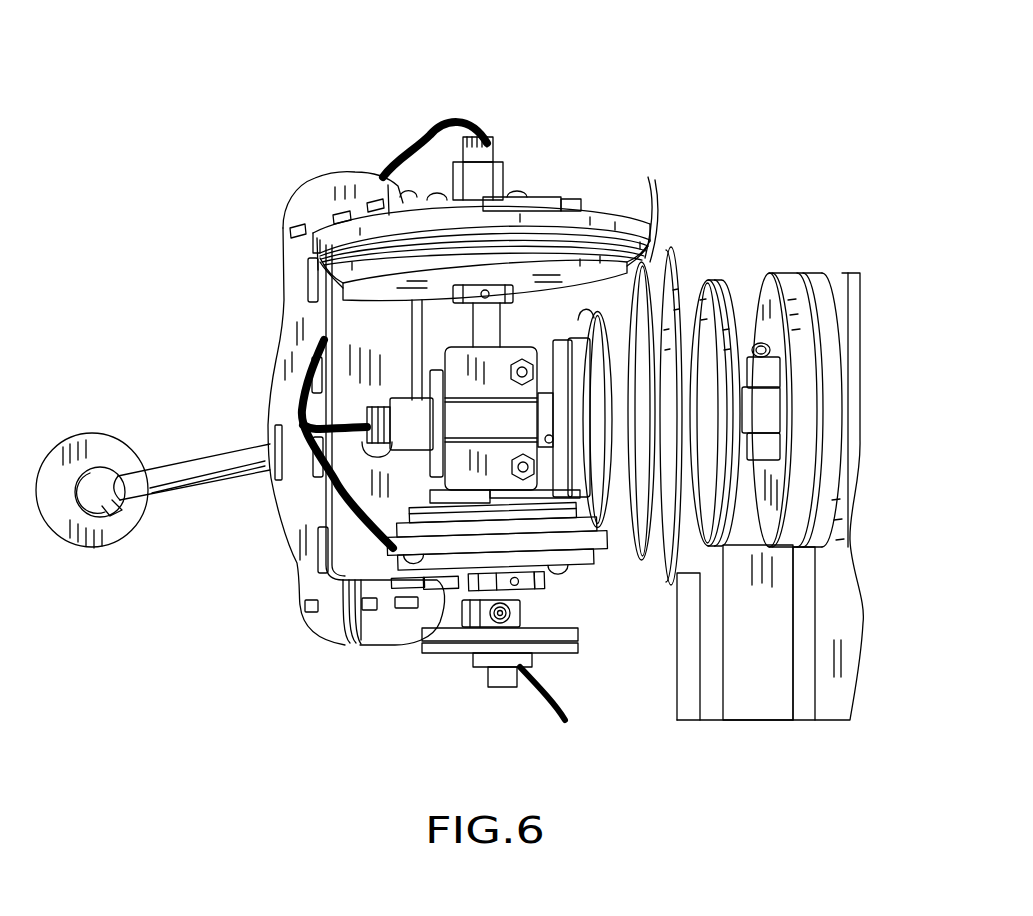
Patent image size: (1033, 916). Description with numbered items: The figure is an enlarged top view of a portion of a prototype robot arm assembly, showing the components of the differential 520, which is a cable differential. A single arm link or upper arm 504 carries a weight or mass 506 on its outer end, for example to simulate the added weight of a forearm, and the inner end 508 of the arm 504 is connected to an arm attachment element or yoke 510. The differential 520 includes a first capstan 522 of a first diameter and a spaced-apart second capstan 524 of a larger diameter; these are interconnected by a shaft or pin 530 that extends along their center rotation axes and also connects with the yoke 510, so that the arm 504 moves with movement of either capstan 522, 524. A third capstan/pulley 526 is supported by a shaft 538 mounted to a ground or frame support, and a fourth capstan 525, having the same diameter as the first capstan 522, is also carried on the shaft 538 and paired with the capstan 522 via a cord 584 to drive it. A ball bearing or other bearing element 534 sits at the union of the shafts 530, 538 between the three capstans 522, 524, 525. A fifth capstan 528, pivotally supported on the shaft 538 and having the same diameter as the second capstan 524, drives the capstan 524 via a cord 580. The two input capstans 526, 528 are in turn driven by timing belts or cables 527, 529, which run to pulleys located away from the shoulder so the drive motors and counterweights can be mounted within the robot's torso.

The differential 520 is at (754, 110).
The cord 580 is at (577, 226).
The second capstan 524 is at (641, 204).
The fifth capstan 528 is at (700, 249).
The third capstan/pulley 526 is at (819, 262).
The arm attachment element or yoke 510 is at (292, 383).
The shaft or pin 530 is at (478, 327).
The shaft 538 is at (556, 400).
The ball bearing or other bearing element 534 is at (511, 432).
The single arm link (or upper arm) 504 is at (152, 478).
The inner end 508 is at (257, 472).
The weight or mass 506 is at (78, 548).
The cord 584 is at (503, 513).
The fourth capstan 525 is at (603, 520).
The first capstan 522 is at (585, 592).
The timing belt or cable 527 is at (793, 668).
The timing belt or cable 529 is at (676, 686).